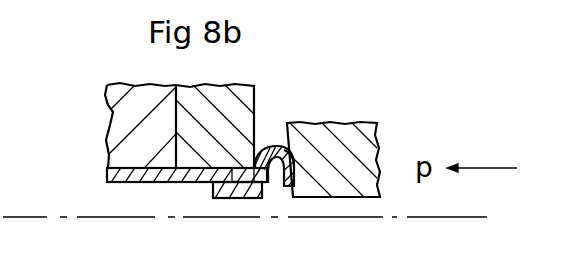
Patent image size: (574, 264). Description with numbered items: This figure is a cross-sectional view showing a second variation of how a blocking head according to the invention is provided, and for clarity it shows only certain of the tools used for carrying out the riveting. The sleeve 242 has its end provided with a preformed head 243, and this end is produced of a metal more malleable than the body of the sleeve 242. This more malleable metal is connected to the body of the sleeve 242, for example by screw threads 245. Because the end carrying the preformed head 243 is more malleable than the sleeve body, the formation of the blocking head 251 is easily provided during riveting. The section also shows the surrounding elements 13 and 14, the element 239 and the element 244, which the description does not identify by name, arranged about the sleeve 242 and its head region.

The first housing part 13 is at (120, 86).
The second housing part 14 is at (229, 100).
The counterpart block 239 is at (357, 167).
The sleeve 242 is at (148, 182).
The preformed head 243 is at (276, 145).
The projection 244 is at (225, 195).
The screw threads 245 is at (267, 187).
The blocking head 251 is at (283, 147).